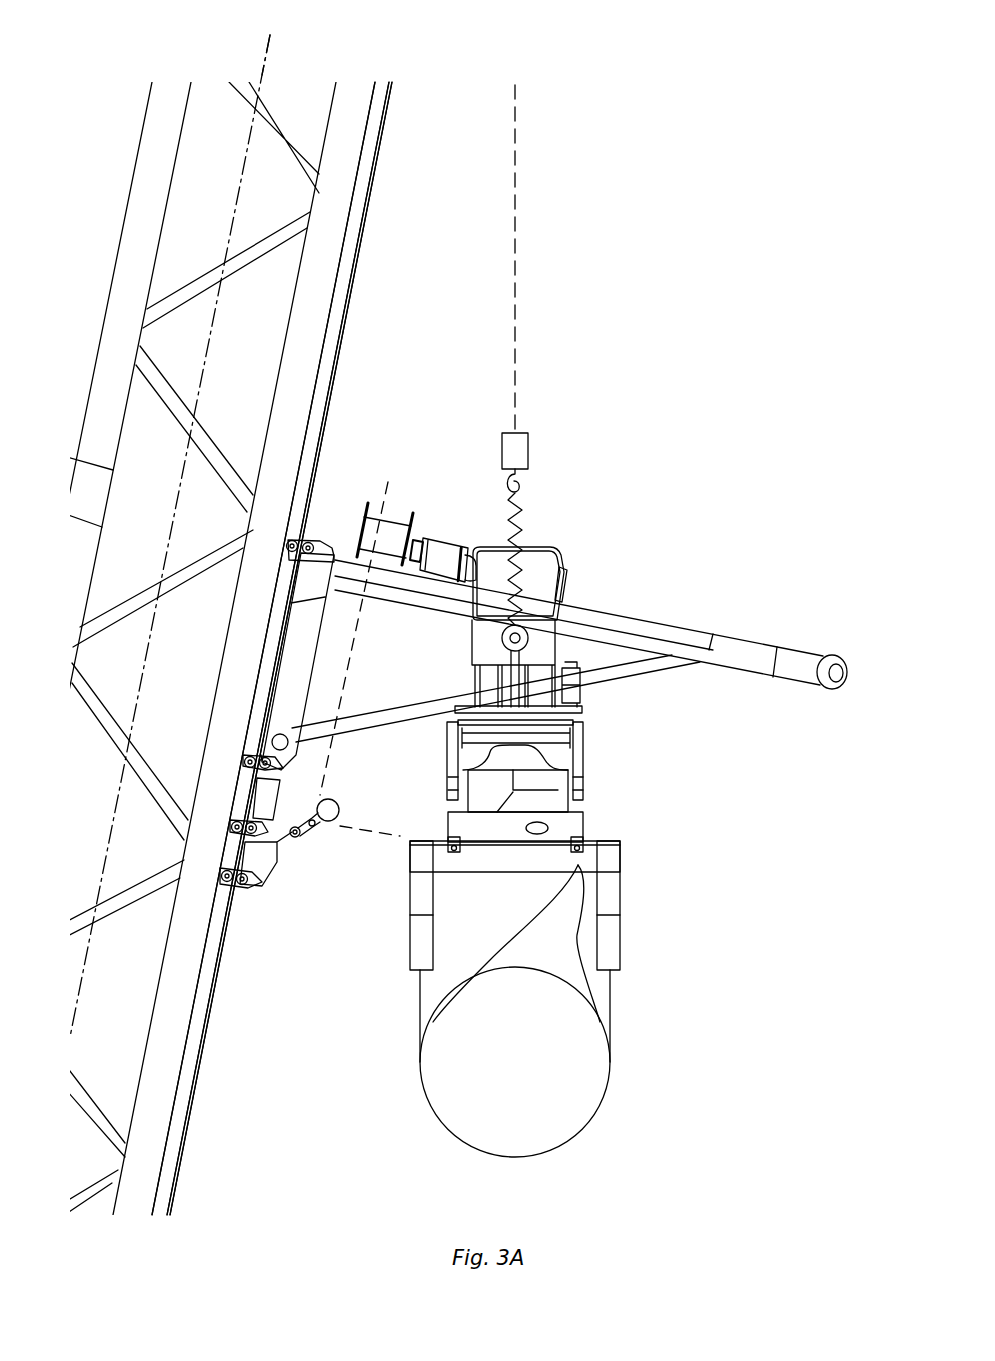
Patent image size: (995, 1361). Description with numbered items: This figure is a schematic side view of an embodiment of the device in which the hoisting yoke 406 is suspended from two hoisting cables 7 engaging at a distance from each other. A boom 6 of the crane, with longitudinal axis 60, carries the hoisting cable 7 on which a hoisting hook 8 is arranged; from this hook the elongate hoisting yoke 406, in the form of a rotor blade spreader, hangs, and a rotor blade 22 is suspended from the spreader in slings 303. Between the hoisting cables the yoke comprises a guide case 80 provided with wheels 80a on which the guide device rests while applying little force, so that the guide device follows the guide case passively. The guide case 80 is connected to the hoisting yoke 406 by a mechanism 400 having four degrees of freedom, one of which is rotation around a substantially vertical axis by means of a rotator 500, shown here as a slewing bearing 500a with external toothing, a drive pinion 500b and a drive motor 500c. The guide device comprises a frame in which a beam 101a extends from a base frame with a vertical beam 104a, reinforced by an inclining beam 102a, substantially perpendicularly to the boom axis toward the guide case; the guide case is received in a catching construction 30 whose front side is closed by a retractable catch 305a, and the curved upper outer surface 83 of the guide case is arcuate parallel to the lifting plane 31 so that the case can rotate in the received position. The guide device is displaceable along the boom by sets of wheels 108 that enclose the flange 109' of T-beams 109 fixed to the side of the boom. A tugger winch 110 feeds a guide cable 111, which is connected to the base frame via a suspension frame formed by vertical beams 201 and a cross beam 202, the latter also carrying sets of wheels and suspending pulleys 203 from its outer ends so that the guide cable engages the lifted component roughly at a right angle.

The boom 6 is at (140, 120).
The longitudinal axis 60 is at (268, 60).
The hoisting cable 7 is at (520, 268).
The hoisting hook 8 is at (536, 441).
The tugger winch 110 is at (380, 512).
The sets of wheels 108 is at (416, 538).
The catching construction 30 is at (459, 528).
The outer surface 83 is at (556, 545).
The catch 305a is at (565, 588).
The beam 101a is at (750, 640).
The wheel 80a is at (530, 636).
The guide case 80 is at (490, 645).
The vertical beam 104a is at (300, 640).
The inclining beam 102a is at (400, 706).
The guide cable 111 is at (340, 694).
The drive motor 500c is at (582, 694).
The lifting plane 31 is at (758, 725).
The slewing bearing 500a is at (456, 711).
The drive pinion 500b is at (582, 718).
The vertical beam 201 is at (268, 797).
The pulley 203 is at (336, 806).
The mechanism 400 is at (590, 764).
The rotator 500 is at (510, 715).
The cross beam 202 is at (270, 860).
The hoisting yoke 406 is at (632, 848).
The sling 303 is at (418, 1002).
The flange 109' is at (279, 648).
The T-beam 109 is at (263, 648).
The rotor blade 22 is at (585, 1097).